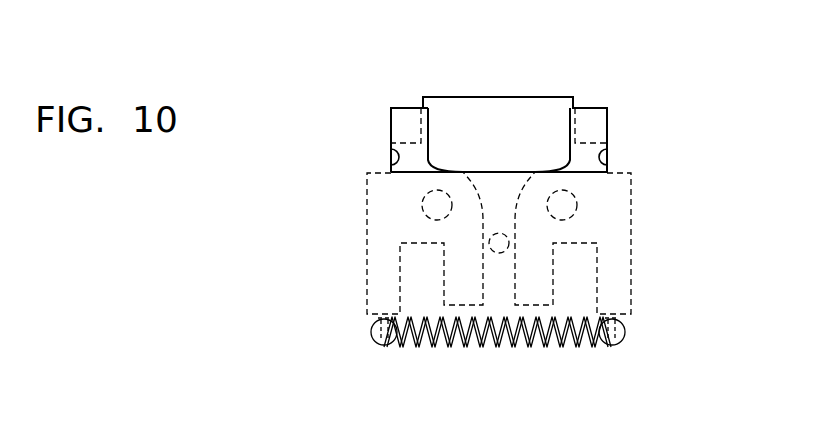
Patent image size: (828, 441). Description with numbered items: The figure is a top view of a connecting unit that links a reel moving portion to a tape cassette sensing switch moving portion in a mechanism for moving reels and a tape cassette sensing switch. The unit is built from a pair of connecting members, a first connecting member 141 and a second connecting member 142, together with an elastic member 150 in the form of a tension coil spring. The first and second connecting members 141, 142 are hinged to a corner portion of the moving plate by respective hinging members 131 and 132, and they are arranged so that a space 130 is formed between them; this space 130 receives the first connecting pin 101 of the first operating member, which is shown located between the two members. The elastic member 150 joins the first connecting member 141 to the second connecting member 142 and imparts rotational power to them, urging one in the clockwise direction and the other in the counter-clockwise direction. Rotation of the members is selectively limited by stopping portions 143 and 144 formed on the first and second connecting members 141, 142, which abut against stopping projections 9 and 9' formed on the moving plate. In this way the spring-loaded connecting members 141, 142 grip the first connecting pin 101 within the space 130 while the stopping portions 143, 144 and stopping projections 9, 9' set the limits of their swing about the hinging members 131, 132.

The stopping projection 9 is at (349, 162).
The stopping projection 9' is at (652, 162).
The first connecting pin 101 is at (499, 233).
The space 130 is at (500, 287).
The hinging member 131 is at (437, 205).
The hinging member 132 is at (562, 205).
The first connecting member 141 is at (377, 296).
The second connecting member 142 is at (622, 295).
The stopping portion 143 is at (403, 132).
The stopping portion 144 is at (593, 130).
The elastic member 150 is at (442, 342).